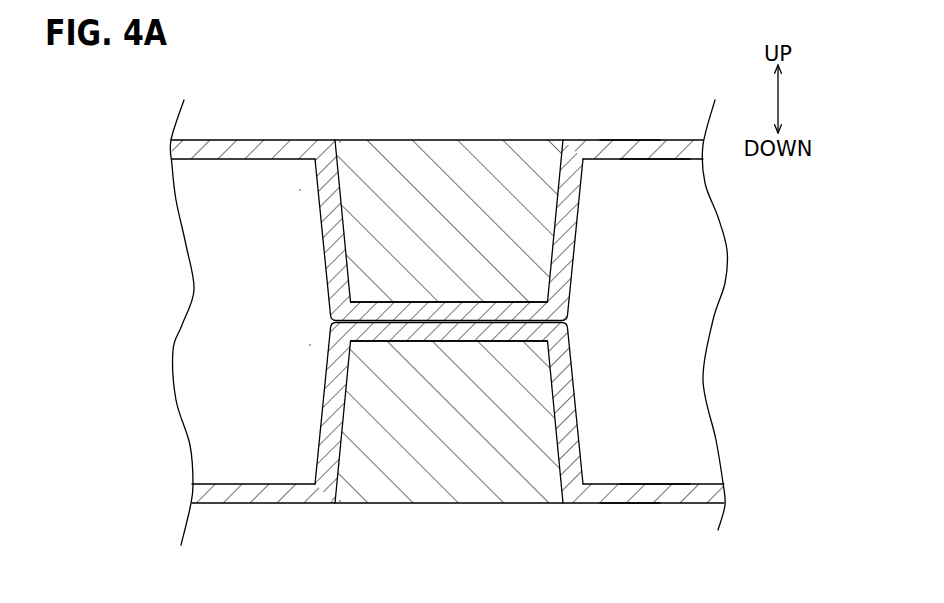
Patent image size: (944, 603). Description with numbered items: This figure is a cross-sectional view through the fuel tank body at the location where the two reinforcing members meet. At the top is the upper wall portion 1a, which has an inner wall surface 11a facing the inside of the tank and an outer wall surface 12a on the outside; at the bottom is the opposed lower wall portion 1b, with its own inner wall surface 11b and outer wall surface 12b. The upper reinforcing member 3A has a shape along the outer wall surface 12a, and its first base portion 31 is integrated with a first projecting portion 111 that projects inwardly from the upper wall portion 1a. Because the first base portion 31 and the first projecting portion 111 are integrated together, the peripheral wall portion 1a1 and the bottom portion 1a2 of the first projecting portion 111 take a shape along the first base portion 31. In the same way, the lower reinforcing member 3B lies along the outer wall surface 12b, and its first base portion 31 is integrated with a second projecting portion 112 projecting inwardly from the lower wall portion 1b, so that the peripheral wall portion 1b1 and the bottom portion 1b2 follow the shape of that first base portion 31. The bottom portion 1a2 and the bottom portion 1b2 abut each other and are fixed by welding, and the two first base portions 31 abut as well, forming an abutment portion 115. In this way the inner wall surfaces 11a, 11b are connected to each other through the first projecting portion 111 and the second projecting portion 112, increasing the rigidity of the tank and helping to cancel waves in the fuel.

The upper wall portion 1a is at (249, 140).
The lower wall portion 1b is at (248, 495).
The peripheral wall portion 1a1 is at (330, 226).
The bottom portion 1a2 is at (400, 310).
The peripheral wall portion 1b1 is at (330, 414).
The bottom portion 1b2 is at (388, 343).
The upper reinforcing member 3A is at (410, 140).
The lower reinforcing member 3B is at (408, 505).
The first base portion 31 is at (452, 140).
The inner wall surface 11a is at (654, 160).
The inner wall surface 11b is at (697, 483).
The outer wall surface 12a is at (630, 138).
The outer wall surface 12b is at (630, 507).
The first projecting portion 111 is at (303, 196).
The second projecting portion 112 is at (313, 342).
The abutment portion 115 is at (578, 319).